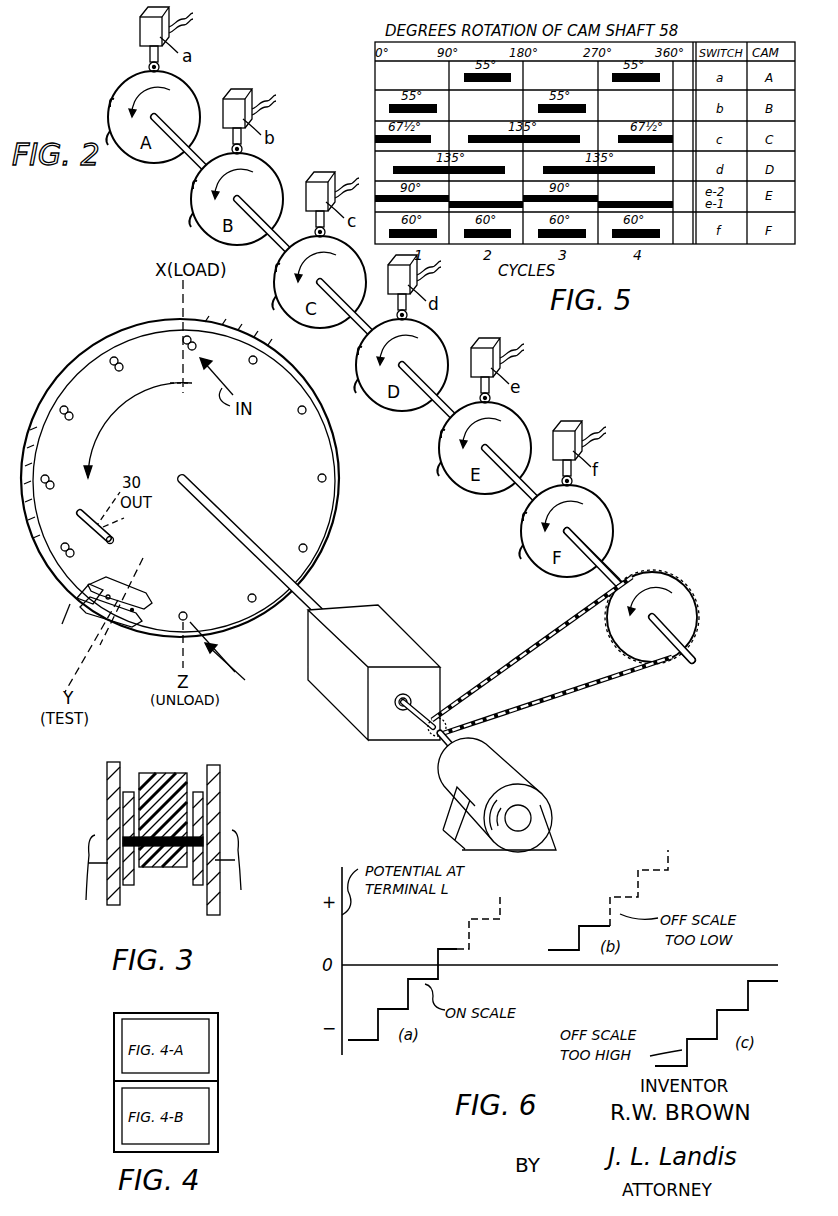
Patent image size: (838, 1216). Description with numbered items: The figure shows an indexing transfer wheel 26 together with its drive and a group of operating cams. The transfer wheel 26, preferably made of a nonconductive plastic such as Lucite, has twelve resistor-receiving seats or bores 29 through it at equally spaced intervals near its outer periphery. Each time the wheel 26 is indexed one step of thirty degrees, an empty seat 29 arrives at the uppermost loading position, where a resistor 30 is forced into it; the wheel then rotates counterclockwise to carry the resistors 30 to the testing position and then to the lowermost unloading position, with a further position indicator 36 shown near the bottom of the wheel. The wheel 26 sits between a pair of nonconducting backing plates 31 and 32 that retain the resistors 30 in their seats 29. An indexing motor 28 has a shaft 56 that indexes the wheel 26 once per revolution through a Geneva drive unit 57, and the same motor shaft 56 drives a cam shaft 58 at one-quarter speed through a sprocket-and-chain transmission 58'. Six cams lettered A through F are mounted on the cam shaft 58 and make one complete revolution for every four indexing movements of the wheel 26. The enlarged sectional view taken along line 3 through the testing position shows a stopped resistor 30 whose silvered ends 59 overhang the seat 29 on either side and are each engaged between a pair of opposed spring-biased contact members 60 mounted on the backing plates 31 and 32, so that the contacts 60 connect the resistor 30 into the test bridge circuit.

In FIG. 2, the section line 3— 3 is at (140, 566).
In FIG. 2, the transfer wheel 26 is at (135, 320).
In FIG. 3, the transfer wheel 26 is at (159, 773).
In FIG. 2, the indexing motor 28 is at (494, 779).
In FIG. 2, the resistor-receiving seats 29 is at (326, 478).
In FIG. 3, the resistor-receiving seats 29 is at (160, 868).
In FIG. 2, the resistor 30 is at (67, 410).
In FIG. 3, the resistor 30 is at (148, 865).
In FIG. 3, the backing plate 31 is at (220, 797).
In FIG. 3, the backing plate 32 is at (107, 792).
In FIG. 2, the unload station indicator 36 is at (216, 655).
In FIG. 2, the motor shaft 56 is at (235, 530).
In FIG. 2, the Geneva drive unit 57 is at (390, 634).
In FIG. 2, the cam shaft 58 is at (633, 581).
In FIG. 2, the sprocket-and-chain transmission 58' is at (550, 656).
In FIG. 3, the silvered ends 59 is at (123, 842).
In FIG. 2, the contact members 60 is at (116, 582).
In FIG. 3, the contact members 60 is at (198, 790).